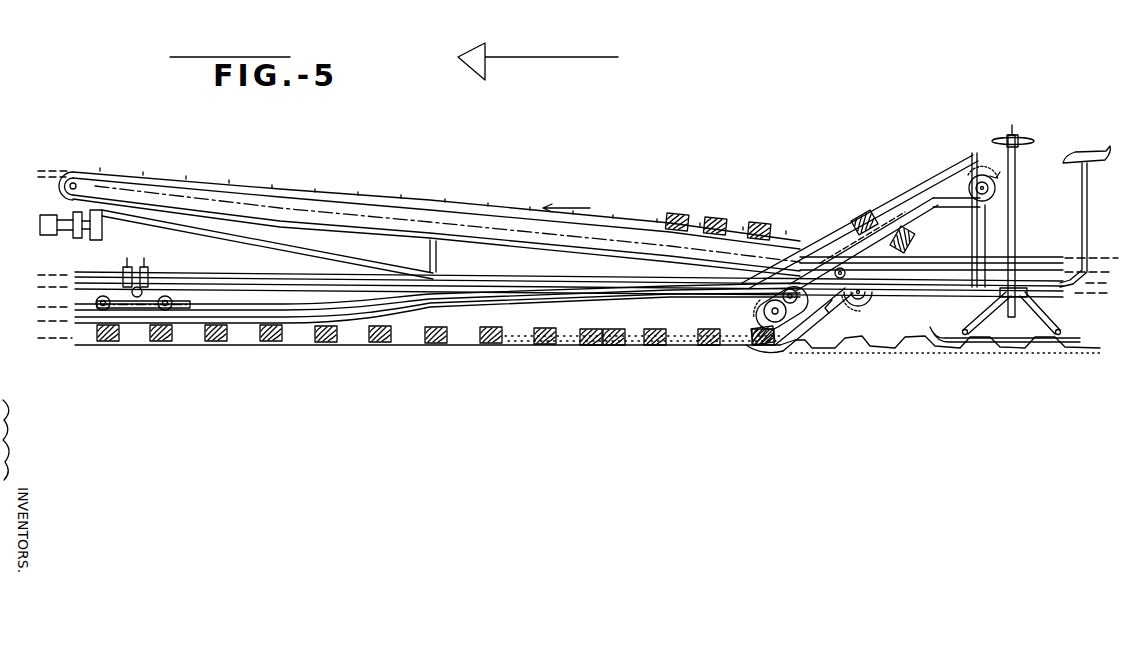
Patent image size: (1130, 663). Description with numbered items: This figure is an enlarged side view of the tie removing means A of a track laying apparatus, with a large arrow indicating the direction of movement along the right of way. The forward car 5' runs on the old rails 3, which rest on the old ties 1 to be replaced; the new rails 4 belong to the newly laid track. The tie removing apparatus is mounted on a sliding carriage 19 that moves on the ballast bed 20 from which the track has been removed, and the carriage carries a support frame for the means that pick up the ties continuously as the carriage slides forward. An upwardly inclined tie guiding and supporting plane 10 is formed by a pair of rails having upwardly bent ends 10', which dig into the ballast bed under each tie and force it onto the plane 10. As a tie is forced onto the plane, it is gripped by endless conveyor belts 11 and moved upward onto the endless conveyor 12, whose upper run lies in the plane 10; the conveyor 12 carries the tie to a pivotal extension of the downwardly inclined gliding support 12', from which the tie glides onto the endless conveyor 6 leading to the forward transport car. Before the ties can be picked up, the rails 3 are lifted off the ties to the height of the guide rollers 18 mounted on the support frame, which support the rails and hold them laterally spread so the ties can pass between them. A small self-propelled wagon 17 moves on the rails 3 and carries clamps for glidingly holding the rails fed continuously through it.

The old ties 1 is at (674, 214).
The old rails 3 is at (306, 323).
The new rails 4 is at (192, 278).
The forward car 5' is at (71, 239).
The endless conveyor 6 is at (322, 199).
The upwardly inclined tie guiding and supporting plane 10 is at (817, 337).
The upwardly bent ends 10' is at (768, 356).
The endless conveyor belts 11 is at (758, 302).
The endless conveyor 12 is at (874, 308).
The downwardly inclined gliding support 12' is at (860, 223).
The self-propelled wagon 17 is at (140, 309).
The guide rollers 18 is at (836, 268).
The sliding carriage 19 is at (981, 238).
The ballast bed 20 is at (902, 349).
The means for removing the old ties A is at (868, 197).